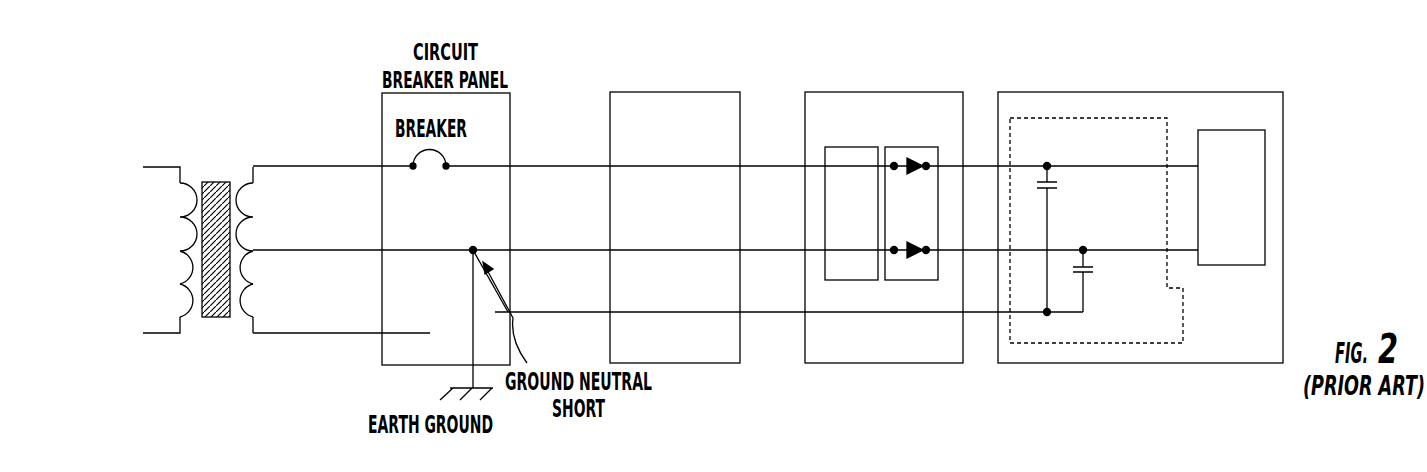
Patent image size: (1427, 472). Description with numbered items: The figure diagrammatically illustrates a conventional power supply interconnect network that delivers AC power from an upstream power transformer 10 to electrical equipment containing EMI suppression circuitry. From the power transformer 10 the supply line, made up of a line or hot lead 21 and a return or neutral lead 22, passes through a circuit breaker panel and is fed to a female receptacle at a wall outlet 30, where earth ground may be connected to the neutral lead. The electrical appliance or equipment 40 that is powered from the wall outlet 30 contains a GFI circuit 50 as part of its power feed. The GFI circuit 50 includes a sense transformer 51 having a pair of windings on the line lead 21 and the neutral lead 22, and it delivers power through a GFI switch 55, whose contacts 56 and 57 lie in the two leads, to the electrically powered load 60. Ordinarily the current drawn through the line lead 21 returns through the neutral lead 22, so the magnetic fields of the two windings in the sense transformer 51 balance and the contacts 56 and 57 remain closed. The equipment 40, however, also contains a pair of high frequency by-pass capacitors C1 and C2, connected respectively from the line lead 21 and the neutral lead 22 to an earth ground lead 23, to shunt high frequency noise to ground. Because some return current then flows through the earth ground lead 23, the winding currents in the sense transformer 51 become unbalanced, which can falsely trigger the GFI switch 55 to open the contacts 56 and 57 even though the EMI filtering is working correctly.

The power transformer 10 is at (333, 125).
The line lead 21 is at (562, 167).
The neutral lead 22 is at (605, 230).
The earth ground lead 23 is at (553, 313).
The wall outlet 30 is at (740, 122).
The electrical appliance or equipment 40 is at (1238, 92).
The GFI circuit 50 is at (943, 90).
The sense transformer 51 is at (833, 298).
The GFI switch 55 is at (941, 126).
The contact 56 is at (915, 173).
The contact 57 is at (913, 242).
The load 60 is at (1237, 267).
The by-pass capacitor C1 is at (1057, 239).
The by-pass capacitor C2 is at (1095, 280).